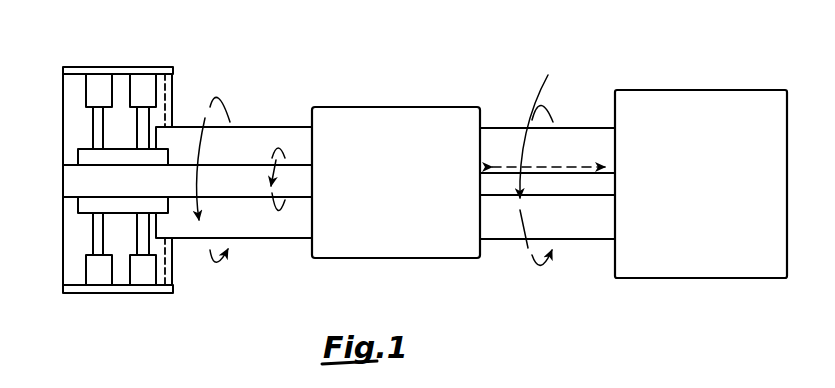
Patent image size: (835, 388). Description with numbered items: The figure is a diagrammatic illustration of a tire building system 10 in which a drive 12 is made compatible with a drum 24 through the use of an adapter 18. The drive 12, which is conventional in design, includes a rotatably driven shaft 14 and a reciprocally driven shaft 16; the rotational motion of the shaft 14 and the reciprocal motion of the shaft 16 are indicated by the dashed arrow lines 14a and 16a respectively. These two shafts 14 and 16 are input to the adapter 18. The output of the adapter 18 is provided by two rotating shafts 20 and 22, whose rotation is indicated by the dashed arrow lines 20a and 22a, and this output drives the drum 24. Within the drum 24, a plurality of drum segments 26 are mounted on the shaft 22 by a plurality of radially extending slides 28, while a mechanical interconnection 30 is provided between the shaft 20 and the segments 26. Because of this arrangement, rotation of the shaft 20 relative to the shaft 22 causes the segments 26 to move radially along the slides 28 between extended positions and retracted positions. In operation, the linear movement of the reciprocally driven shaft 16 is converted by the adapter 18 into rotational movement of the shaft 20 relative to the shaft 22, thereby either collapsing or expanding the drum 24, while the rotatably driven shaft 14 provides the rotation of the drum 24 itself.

The tire building system 10 is at (399, 68).
The drive 12 is at (740, 90).
The rotatably driven shaft 14 is at (592, 124).
The dashed arrow line 14a is at (550, 158).
The reciprocally driven shaft 16 is at (497, 185).
The dashed arrow line 16a is at (590, 166).
The adapter 18 is at (421, 107).
The rotating shaft 20 is at (243, 127).
The dashed arrow line 20a is at (226, 157).
The rotating shaft 22 is at (302, 182).
The dashed arrow line 22a is at (298, 140).
The drum 24 is at (61, 64).
The drum segments 26 is at (115, 67).
The radially extending slides 28 is at (85, 89).
The mechanical interconnection 30 is at (165, 92).